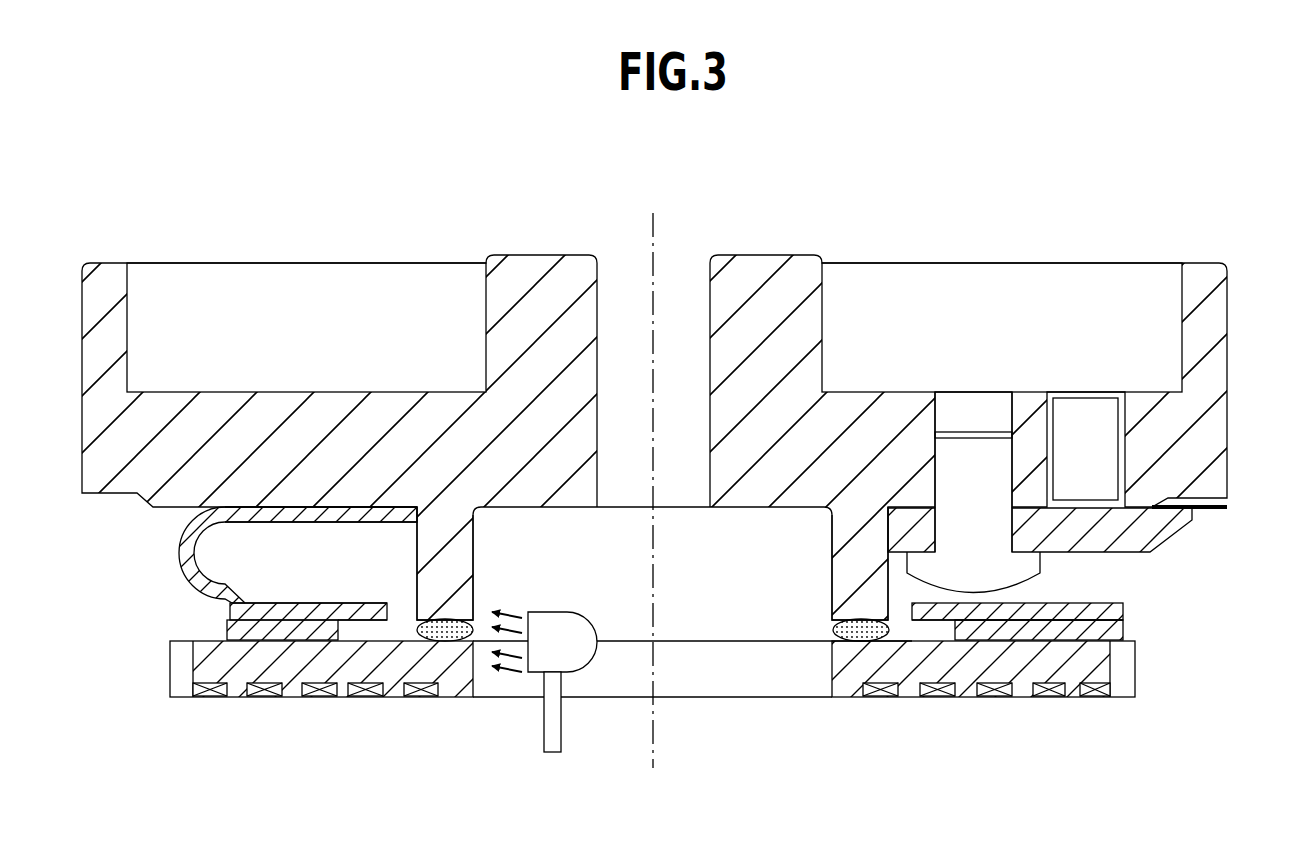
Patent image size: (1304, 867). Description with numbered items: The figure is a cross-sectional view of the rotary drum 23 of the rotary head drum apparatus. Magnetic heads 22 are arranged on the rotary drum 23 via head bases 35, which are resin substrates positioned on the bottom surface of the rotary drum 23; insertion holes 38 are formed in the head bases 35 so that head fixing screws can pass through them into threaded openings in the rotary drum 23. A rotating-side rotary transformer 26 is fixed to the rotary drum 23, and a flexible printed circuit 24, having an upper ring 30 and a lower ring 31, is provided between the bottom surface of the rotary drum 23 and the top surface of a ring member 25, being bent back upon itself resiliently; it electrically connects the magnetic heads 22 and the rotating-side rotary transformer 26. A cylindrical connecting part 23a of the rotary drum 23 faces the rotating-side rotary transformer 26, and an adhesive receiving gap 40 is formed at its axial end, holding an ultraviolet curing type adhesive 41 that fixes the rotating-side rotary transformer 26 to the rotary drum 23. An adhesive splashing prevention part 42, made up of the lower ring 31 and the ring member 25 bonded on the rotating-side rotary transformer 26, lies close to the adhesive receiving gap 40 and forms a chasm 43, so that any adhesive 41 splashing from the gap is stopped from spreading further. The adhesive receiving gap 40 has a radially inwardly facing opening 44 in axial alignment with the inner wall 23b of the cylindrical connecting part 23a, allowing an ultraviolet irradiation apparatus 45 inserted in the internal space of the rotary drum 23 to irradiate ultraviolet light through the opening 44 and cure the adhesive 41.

The magnetic head 22 is at (1232, 507).
The rotary drum 23 is at (1215, 301).
The cylindrical connecting part 23a is at (465, 549).
The inner wall 23b is at (828, 547).
The flexible printed circuit 24 is at (652, 433).
The ring member 25 is at (232, 626).
The rotating-side rotary transformer 26 is at (205, 662).
The upper ring 30 is at (378, 523).
The lower ring 31 is at (302, 602).
The head base 35 is at (1160, 531).
The insertion hole 38 is at (1030, 528).
The adhesive receiving gap 40 is at (818, 418).
The adhesive 41 is at (449, 637).
The adhesive splashing prevention part 42 is at (233, 590).
The chasm 43 is at (365, 628).
The radially inwardly facing opening 44 is at (832, 632).
The ultraviolet irradiation apparatus 45 is at (561, 643).